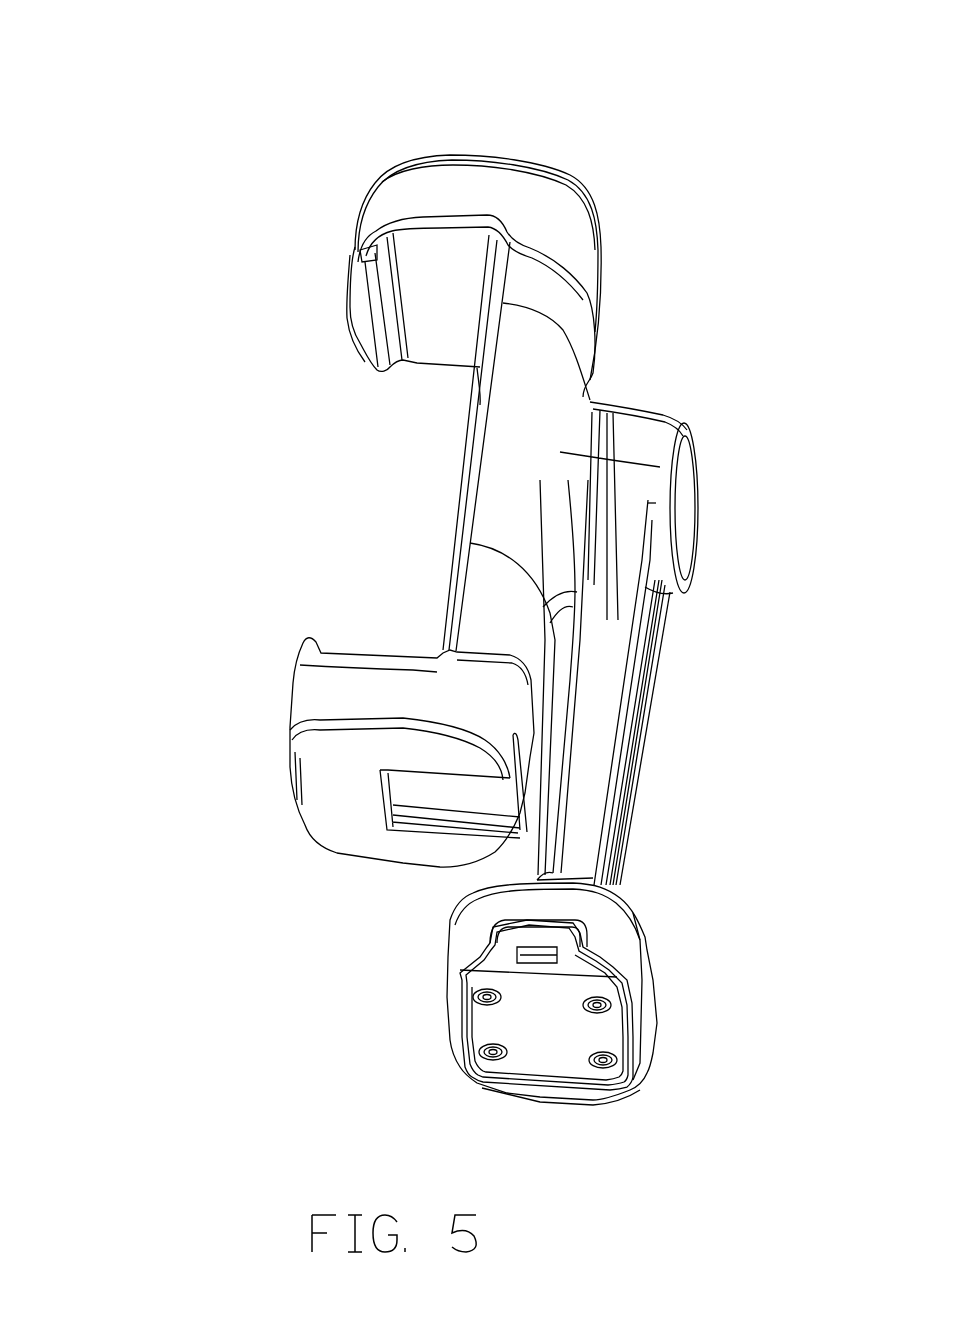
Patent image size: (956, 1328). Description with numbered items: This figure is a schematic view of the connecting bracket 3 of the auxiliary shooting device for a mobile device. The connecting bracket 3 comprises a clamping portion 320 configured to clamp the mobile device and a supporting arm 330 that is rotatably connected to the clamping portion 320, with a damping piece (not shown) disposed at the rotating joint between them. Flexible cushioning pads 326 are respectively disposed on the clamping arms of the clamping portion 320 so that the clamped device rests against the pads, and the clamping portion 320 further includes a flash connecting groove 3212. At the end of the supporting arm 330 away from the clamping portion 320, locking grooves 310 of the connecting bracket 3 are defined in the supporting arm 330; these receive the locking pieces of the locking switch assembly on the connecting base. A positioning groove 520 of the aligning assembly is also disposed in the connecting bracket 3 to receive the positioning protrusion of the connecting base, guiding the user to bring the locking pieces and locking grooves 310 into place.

The connecting bracket 3 is at (392, 61).
The flexible cushioning pads 326 is at (450, 305).
The clamping portion 320 is at (340, 557).
The flash connecting groove 3212 is at (470, 795).
The supporting arm 330 is at (612, 578).
The locking grooves 310 is at (573, 952).
The positioning groove 520 is at (540, 960).